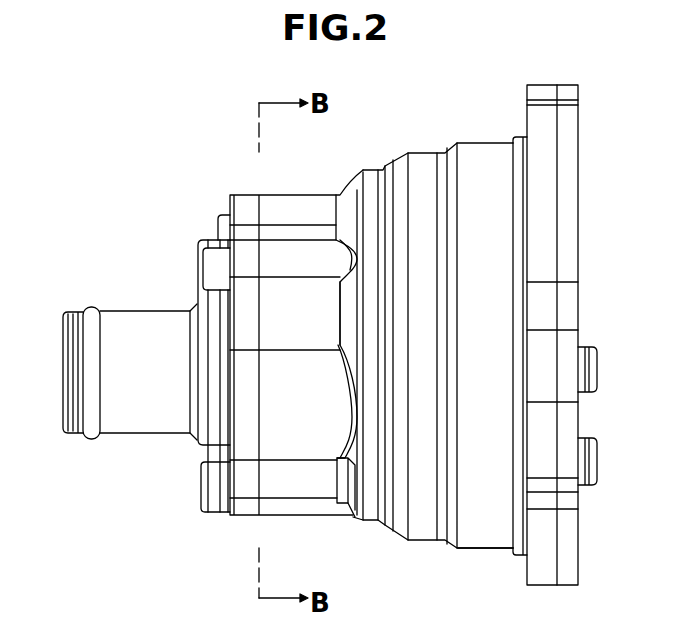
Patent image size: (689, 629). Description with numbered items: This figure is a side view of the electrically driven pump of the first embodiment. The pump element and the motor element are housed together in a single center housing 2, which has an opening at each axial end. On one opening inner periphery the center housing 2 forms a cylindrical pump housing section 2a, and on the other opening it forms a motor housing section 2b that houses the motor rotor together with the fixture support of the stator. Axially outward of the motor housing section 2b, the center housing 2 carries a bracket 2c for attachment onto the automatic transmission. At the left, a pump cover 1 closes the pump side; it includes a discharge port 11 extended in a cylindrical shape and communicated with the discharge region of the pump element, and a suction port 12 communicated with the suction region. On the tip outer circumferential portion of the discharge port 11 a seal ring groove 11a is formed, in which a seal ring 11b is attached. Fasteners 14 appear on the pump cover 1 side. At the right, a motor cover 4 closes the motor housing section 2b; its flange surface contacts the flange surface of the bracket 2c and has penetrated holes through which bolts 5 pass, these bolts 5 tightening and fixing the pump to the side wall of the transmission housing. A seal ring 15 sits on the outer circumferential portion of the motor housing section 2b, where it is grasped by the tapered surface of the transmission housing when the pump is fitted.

The pump cover 1 is at (240, 193).
The center housing 2 is at (463, 141).
The pump housing section 2a is at (300, 478).
The motor housing section 2b is at (475, 550).
The bracket 2c is at (530, 110).
The motor cover 4 is at (566, 84).
The bolt 5 is at (598, 370).
The discharge port 11 is at (128, 422).
The seal ring groove 11a is at (79, 436).
The seal ring 11b is at (90, 307).
The suction port 12 is at (188, 382).
The nut 14 is at (202, 488).
The seal ring 15 is at (520, 523).